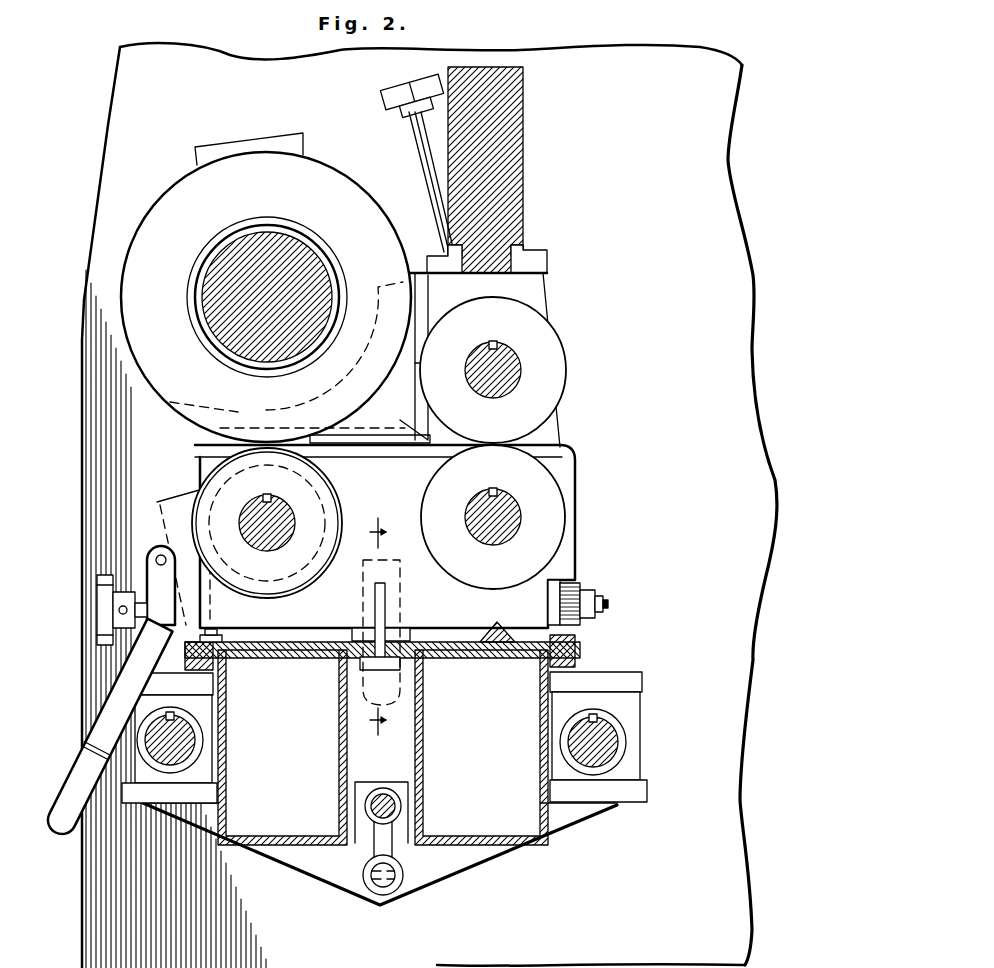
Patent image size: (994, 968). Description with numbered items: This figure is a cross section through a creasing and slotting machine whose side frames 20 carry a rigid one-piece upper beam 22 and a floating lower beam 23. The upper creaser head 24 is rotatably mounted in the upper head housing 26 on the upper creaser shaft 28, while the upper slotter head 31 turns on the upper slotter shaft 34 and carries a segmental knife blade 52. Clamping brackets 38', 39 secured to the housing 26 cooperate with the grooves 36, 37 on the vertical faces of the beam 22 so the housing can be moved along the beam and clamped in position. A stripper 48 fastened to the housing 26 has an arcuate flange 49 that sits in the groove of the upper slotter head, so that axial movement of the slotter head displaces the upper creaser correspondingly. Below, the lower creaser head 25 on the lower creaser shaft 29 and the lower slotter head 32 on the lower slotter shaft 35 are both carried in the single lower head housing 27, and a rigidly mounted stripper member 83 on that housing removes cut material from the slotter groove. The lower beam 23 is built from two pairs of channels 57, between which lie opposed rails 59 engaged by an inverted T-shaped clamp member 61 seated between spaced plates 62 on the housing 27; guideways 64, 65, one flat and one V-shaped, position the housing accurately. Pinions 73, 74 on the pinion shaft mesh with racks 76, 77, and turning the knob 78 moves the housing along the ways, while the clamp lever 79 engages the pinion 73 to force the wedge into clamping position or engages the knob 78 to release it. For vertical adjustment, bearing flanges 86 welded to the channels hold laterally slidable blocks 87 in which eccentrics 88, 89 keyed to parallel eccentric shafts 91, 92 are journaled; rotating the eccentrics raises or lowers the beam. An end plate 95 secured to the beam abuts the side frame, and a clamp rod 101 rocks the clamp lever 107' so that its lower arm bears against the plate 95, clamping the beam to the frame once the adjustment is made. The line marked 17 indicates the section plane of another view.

The side frame 20 is at (108, 125).
The segmental knife blade 52 is at (257, 137).
The upper slotter head 31 is at (310, 166).
The upper beam 22 is at (512, 178).
The groove 36 is at (440, 242).
The groove 37 is at (526, 246).
The clamping bracket 38' is at (404, 254).
The clamping bracket 39 is at (546, 258).
The upper head housing 26 is at (543, 302).
The upper slotter shaft 34 is at (214, 303).
The upper creaser shaft 28 is at (511, 373).
The stripper 48 is at (402, 405).
The upper creaser head 24 is at (538, 418).
The lower creaser head 25 is at (541, 485).
The flange 49 is at (236, 410).
The stripper member 83 is at (174, 500).
The lower slotter shaft 35 is at (251, 513).
The lower creaser shaft 29 is at (501, 531).
The lower head housing 27 is at (564, 556).
The section line 17 is at (388, 626).
The pinion 74 is at (584, 585).
The lower slotter head 32 is at (276, 593).
The rail 59 is at (350, 640).
The plate 62 is at (401, 630).
The guideway 65 is at (498, 628).
The knob 78 is at (100, 632).
The pinion 73 is at (212, 640).
The rack 77 is at (572, 646).
The slidable block 87 is at (622, 692).
The rack 76 is at (222, 664).
The guideway 64 is at (300, 652).
The clamp member 61 is at (342, 693).
The bearing flange 86 is at (215, 702).
The channel 57 is at (345, 793).
The clamp rod 101 is at (396, 805).
The clamp lever 79 is at (64, 803).
The eccentric 89 is at (143, 758).
The eccentric shaft 92 is at (168, 760).
The clamp lever 107' is at (355, 838).
The eccentric 88 is at (604, 772).
The eccentric shaft 91 is at (592, 770).
The floating lower beam 23 is at (562, 820).
The plate 95 is at (444, 870).